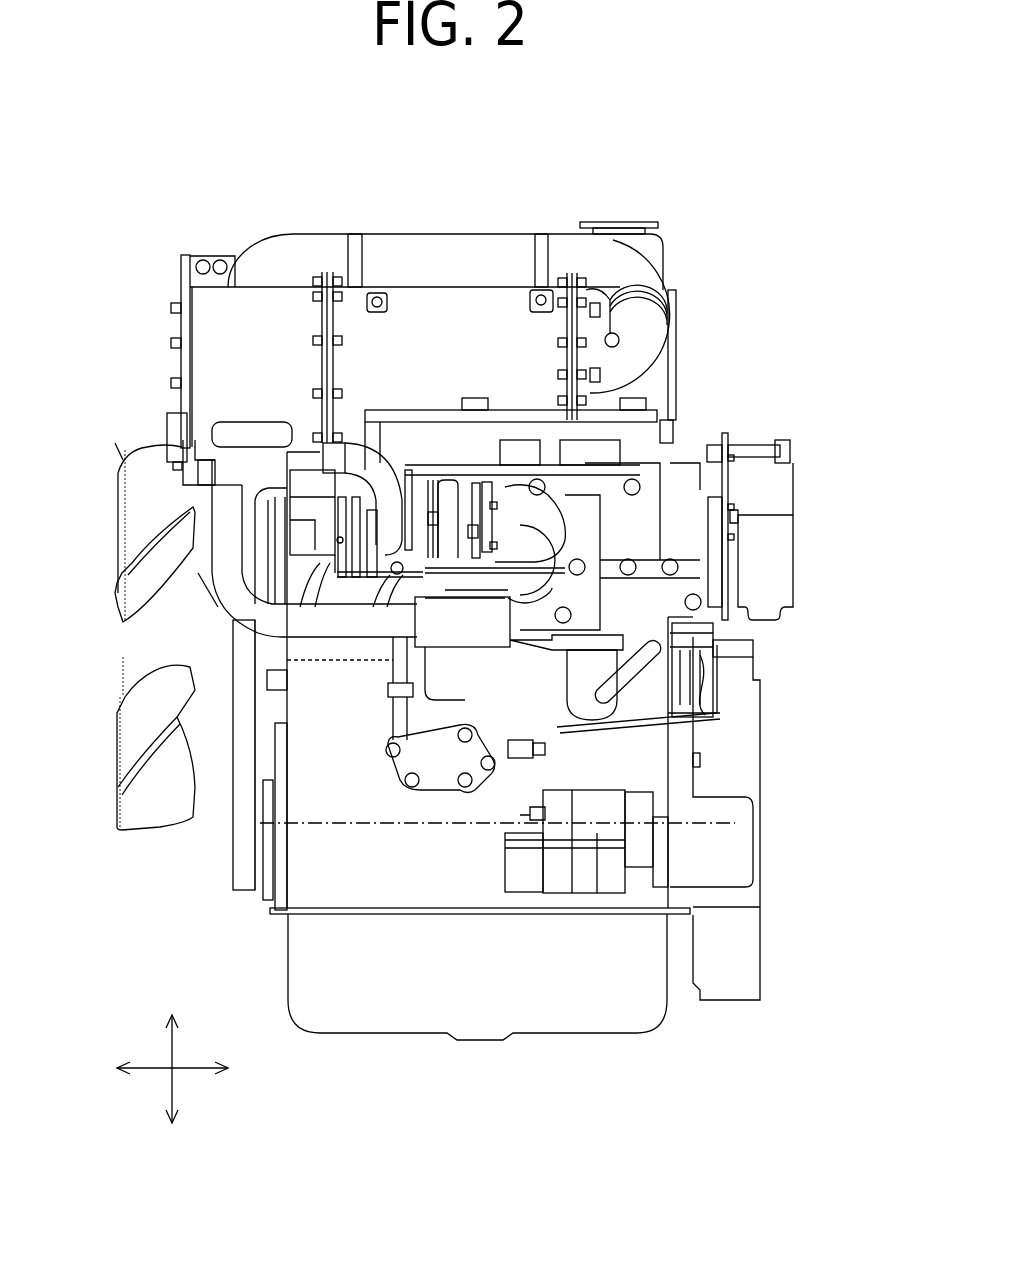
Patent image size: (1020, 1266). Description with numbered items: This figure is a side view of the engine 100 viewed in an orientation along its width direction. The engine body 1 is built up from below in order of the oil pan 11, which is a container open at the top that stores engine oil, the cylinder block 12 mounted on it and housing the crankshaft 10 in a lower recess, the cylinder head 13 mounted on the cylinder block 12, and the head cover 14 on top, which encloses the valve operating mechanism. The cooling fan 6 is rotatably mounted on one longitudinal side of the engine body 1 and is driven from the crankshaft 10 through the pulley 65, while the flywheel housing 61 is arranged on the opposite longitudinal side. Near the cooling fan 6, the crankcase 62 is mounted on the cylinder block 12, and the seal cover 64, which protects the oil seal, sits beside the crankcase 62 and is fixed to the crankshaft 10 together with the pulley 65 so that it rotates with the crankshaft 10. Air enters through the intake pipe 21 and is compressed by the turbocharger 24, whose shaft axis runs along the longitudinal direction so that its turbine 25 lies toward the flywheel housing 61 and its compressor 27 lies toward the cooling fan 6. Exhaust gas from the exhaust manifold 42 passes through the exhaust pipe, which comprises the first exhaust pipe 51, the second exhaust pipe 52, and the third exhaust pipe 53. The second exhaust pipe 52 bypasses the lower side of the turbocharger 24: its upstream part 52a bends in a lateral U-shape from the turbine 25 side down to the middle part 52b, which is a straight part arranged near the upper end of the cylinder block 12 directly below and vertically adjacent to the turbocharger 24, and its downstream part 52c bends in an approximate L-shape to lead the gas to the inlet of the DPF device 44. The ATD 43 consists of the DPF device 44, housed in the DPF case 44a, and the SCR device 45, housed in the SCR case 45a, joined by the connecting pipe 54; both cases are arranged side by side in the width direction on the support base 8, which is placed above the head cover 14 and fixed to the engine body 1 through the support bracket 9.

The engine 100 is at (188, 187).
The engine body 1 is at (185, 926).
The cooling fan 6 is at (143, 470).
The support base 8 is at (542, 402).
The support bracket 9 is at (703, 510).
The crankshaft 10 is at (410, 825).
The oil pan 11 is at (485, 1027).
The cylinder block 12 is at (296, 806).
The cylinder head 13 is at (688, 587).
The head cover 14 is at (470, 470).
The intake pipe 21 is at (322, 460).
The turbocharger 24 is at (405, 465).
The turbine 25 is at (440, 480).
The compressor 27 is at (375, 460).
The exhaust manifold 42 is at (355, 605).
The ATD (exhaust gas purification device) 43 is at (503, 215).
The DPF device 44 is at (208, 325).
The DPF case 44a is at (441, 300).
The SCR device 45 is at (692, 390).
The SCR case 45a is at (662, 385).
The first exhaust pipe 51 is at (425, 648).
The second exhaust pipe (connection pipe) 52 is at (220, 670).
The upstream part 52a is at (590, 566).
The middle part (straight part) 52b is at (395, 740).
The downstream part 52c is at (262, 637).
The third exhaust pipe 53 is at (650, 232).
The connecting pipe 54 is at (410, 252).
The flywheel housing 61 is at (733, 975).
The crankcase 62 is at (283, 867).
The seal cover 64 is at (265, 892).
The pulley 65 is at (258, 870).